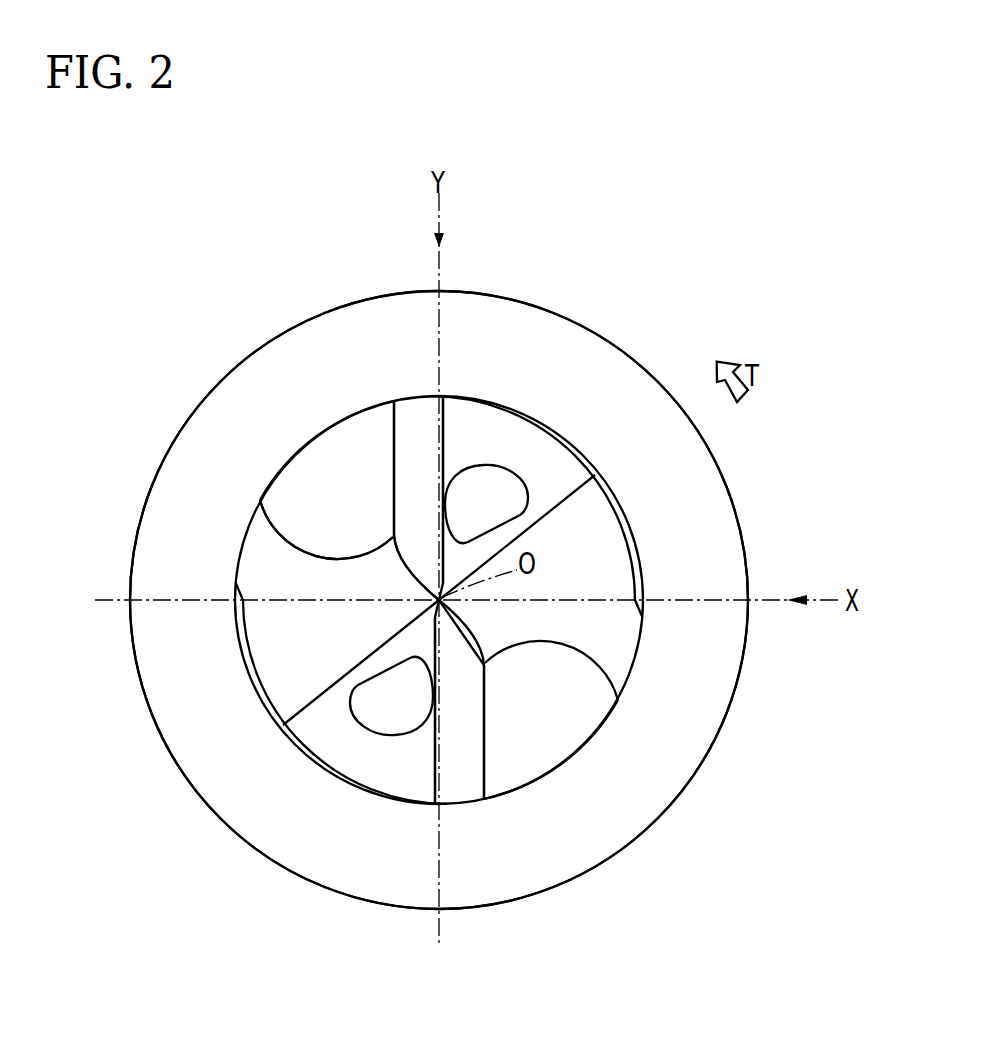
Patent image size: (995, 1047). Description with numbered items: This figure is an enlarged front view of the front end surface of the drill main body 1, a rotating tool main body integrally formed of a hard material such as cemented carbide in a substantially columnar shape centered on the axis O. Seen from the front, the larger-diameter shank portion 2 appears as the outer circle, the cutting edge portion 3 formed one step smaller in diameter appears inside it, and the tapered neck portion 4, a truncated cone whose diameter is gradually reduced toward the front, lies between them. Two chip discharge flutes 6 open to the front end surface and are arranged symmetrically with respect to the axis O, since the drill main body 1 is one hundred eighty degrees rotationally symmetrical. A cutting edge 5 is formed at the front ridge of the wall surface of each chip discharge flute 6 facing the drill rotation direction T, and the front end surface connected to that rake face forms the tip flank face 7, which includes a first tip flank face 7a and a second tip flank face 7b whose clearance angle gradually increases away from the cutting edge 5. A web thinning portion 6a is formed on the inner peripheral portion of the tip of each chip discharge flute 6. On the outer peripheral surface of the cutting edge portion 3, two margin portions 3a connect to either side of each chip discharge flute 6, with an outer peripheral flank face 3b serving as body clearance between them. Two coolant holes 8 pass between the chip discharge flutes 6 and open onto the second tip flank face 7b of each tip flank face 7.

The drill main body 1 is at (557, 238).
The shank portion 2 is at (630, 330).
The cutting edge portion 3 is at (530, 372).
The margin portion 3a is at (405, 383).
The outer peripheral flank face 3b is at (623, 530).
The tapered neck portion 4 is at (580, 355).
The cutting edge 5 is at (394, 443).
The chip discharge flute 6 is at (305, 448).
The web thinning portion 6a is at (323, 575).
The tip flank face 7 is at (463, 176).
The first tip flank face 7a is at (415, 413).
The second tip flank face 7b is at (473, 430).
The coolant hole 8 is at (535, 466).